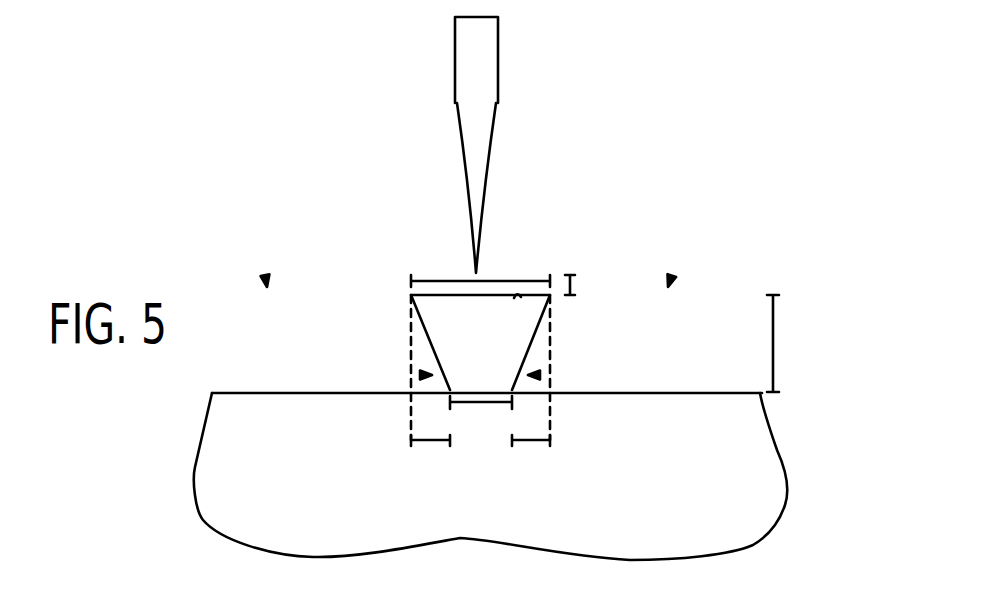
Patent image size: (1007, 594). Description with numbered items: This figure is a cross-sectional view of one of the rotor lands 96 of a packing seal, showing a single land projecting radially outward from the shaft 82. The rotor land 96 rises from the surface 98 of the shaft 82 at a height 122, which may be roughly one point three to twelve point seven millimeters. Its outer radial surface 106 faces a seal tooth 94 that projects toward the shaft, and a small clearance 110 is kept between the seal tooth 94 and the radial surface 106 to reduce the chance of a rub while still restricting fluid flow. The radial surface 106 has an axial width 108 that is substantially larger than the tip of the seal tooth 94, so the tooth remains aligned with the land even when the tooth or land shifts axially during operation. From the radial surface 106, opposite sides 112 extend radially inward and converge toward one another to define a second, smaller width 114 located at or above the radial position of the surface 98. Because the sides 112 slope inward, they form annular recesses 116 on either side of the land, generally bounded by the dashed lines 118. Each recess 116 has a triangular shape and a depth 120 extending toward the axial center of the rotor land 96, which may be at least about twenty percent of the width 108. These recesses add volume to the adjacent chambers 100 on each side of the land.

The shaft 82 is at (775, 438).
The seal tooth 94 is at (455, 58).
The rotor land 96 is at (428, 313).
The surface of the shaft 98 is at (668, 393).
The chamber 100 is at (266, 280).
The radial surface 106 is at (514, 298).
The width of the radial surface 108 is at (447, 279).
The clearance 110 is at (575, 282).
The opposite sides 112 is at (520, 373).
The second width 114 is at (478, 405).
The annular recess 116 is at (425, 375).
The dashed lines 118 is at (411, 410).
The depth of the recess 120 is at (428, 445).
The height of the rotor land 122 is at (773, 345).